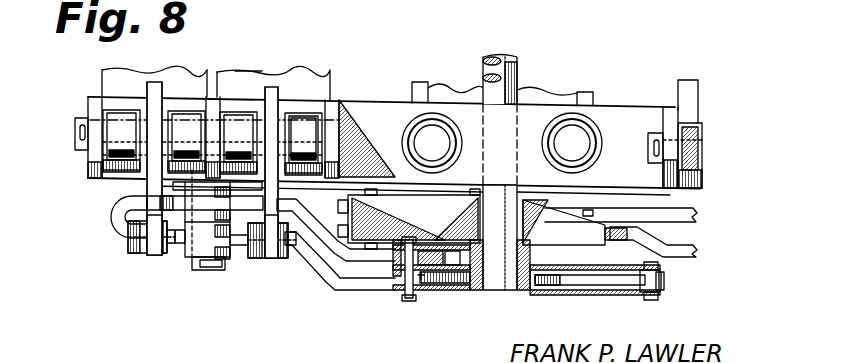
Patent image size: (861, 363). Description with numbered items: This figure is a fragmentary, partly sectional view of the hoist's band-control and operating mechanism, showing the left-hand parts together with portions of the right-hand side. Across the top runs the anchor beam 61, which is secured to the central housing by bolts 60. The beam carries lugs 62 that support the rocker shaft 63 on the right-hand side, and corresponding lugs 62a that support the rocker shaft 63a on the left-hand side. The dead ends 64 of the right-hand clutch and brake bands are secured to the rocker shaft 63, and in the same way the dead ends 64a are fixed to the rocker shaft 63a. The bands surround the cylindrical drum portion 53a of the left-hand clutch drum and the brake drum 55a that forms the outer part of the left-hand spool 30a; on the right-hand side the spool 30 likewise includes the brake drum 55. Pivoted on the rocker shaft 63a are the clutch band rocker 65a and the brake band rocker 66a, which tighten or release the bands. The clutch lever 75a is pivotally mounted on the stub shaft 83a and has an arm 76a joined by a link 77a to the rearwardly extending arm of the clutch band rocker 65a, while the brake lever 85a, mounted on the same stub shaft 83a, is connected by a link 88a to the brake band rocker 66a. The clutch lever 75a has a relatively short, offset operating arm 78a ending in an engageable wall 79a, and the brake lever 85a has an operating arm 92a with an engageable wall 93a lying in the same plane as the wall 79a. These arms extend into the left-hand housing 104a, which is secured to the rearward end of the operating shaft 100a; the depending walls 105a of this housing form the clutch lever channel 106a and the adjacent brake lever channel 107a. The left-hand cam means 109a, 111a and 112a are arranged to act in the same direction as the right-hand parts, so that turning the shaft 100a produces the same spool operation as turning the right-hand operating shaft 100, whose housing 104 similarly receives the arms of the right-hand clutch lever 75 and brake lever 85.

The anchor beam 61 is at (378, 98).
The lugs 62a is at (95, 105).
The cylindrical drum portion 53a is at (130, 78).
The brake drum 55a is at (252, 73).
The rocker shaft 63a is at (77, 133).
The dead ends 64a is at (118, 157).
The brake band rocker 66a is at (300, 123).
The clutch band rocker 65a is at (155, 88).
The spool 30a is at (413, 82).
The spool 30 is at (592, 90).
The bolts 60 is at (432, 140).
The operating shaft 100 is at (507, 90).
The operating shaft 100a is at (510, 88).
The lugs 62 is at (672, 113).
The brake drum 55 is at (688, 88).
The dead ends 64 is at (683, 147).
The rocker shaft 63 is at (650, 146).
The clutch lever 75 is at (702, 210).
The brake lever channel 107a is at (586, 266).
The brake lever 85 is at (706, 250).
The housing 104 is at (565, 249).
The housing 104a is at (541, 299).
The engageable wall 93a is at (618, 285).
The cam means 112a is at (665, 283).
The clutch lever channel 106a is at (478, 262).
The operating arm 92a is at (367, 257).
The depending walls 105a is at (433, 265).
The engageable wall 79a is at (453, 275).
The operating arm 78a is at (363, 258).
The cam means 109a is at (393, 262).
The cam means 111a is at (423, 278).
The clutch lever 75a is at (331, 251).
The brake lever 85a is at (326, 288).
The arm 76a is at (108, 221).
The link 77a is at (138, 254).
The stub shaft 83a is at (209, 268).
The link 88a is at (258, 259).